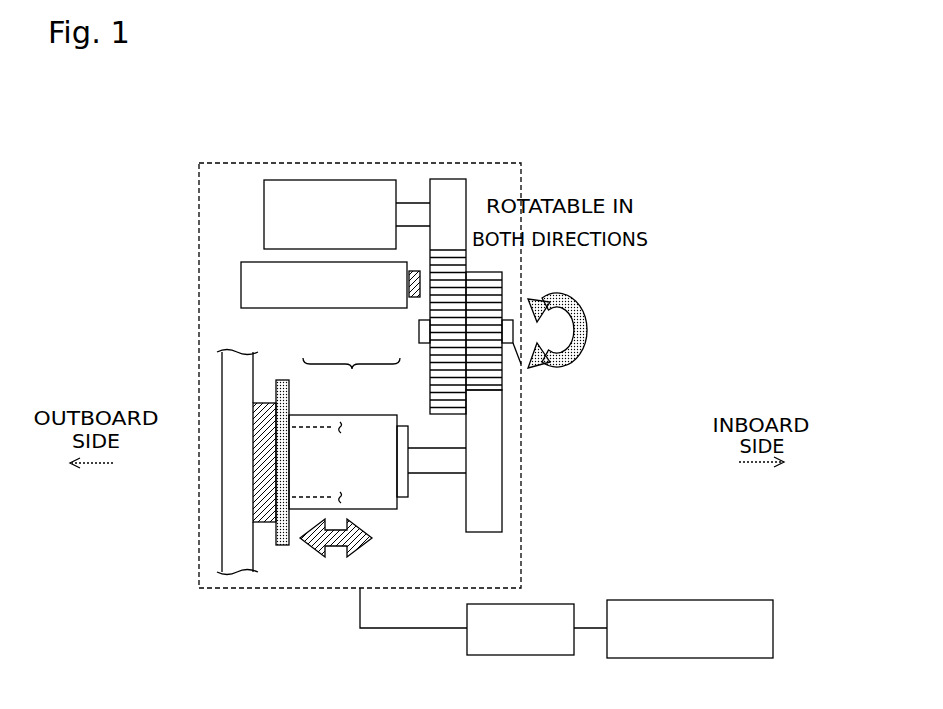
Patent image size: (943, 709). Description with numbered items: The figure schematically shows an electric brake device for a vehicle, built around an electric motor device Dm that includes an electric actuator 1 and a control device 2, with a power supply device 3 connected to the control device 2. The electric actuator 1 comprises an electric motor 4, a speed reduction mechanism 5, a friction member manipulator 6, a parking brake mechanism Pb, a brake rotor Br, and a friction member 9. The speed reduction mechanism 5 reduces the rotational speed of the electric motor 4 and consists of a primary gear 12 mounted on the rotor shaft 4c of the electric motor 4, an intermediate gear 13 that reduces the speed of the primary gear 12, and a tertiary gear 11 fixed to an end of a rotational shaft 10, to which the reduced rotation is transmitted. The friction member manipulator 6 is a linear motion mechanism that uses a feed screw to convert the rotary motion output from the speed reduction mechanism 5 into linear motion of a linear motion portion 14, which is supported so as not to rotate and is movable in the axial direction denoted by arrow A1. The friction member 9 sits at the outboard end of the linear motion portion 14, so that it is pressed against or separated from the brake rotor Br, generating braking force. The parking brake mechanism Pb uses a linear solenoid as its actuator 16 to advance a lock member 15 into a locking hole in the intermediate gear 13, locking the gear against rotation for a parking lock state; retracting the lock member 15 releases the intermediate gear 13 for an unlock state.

The electric actuator 1 is at (521, 561).
The control device 2 is at (552, 604).
The power supply device 3 is at (733, 600).
The electric motor 4 is at (328, 183).
The rotor shaft 4c is at (410, 213).
The speed reduction mechanism 5 is at (662, 163).
The friction member manipulator 6 is at (385, 505).
The friction member 9 is at (255, 522).
The rotational shaft 10 is at (442, 466).
The tertiary gear 11 is at (498, 453).
The primary gear 12 is at (457, 187).
The intermediate gear 13 is at (510, 377).
The linear motion portion 14 is at (253, 423).
The lock member 15 is at (412, 297).
The actuator 16 is at (323, 308).
The brake rotor Br is at (233, 375).
The parking brake mechanism Pb is at (351, 379).
The axial direction A1 is at (372, 541).
The electric motor device Dm is at (629, 503).